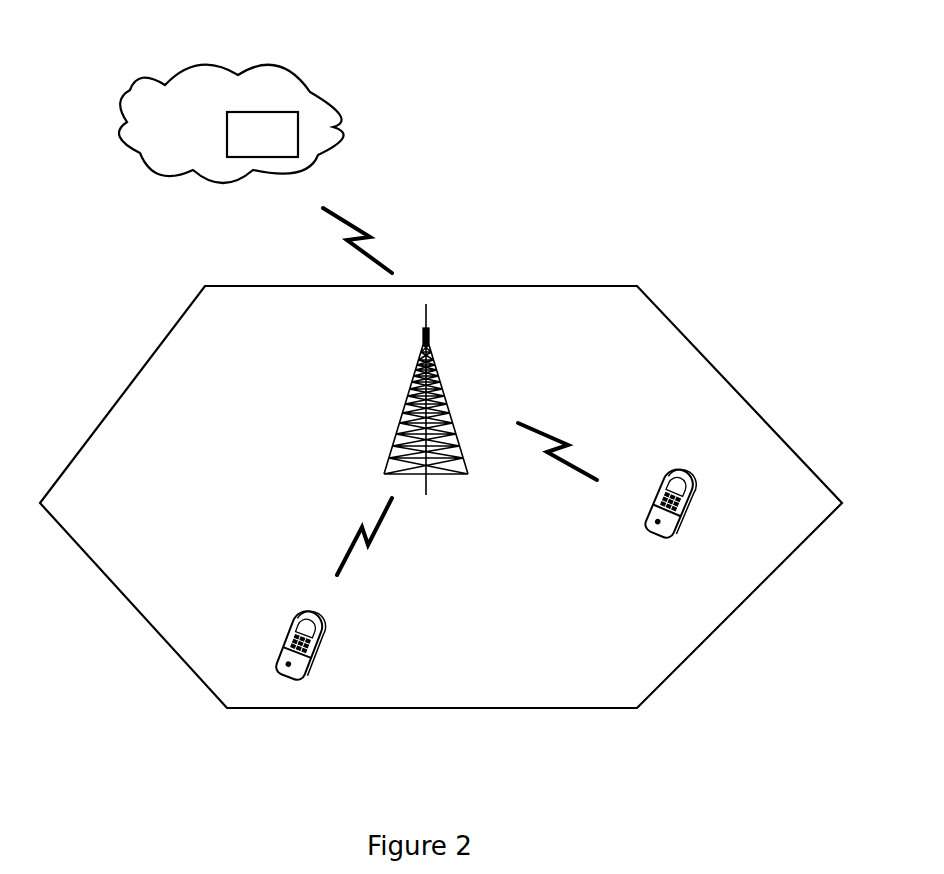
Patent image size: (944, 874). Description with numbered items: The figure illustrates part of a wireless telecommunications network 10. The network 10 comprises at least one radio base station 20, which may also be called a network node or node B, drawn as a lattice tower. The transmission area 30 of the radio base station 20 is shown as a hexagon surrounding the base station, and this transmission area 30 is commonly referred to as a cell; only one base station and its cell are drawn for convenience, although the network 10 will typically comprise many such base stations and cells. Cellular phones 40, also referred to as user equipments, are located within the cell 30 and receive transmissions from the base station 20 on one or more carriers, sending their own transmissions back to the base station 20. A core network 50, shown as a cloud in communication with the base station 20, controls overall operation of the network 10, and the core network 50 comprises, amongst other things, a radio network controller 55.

The wireless telecommunications network 10 is at (593, 247).
The radio base station 20 is at (392, 398).
The transmission area 30 is at (683, 332).
The cellular phones 40 is at (337, 647).
The core network 50 is at (200, 65).
The radio network controller 55 is at (298, 133).